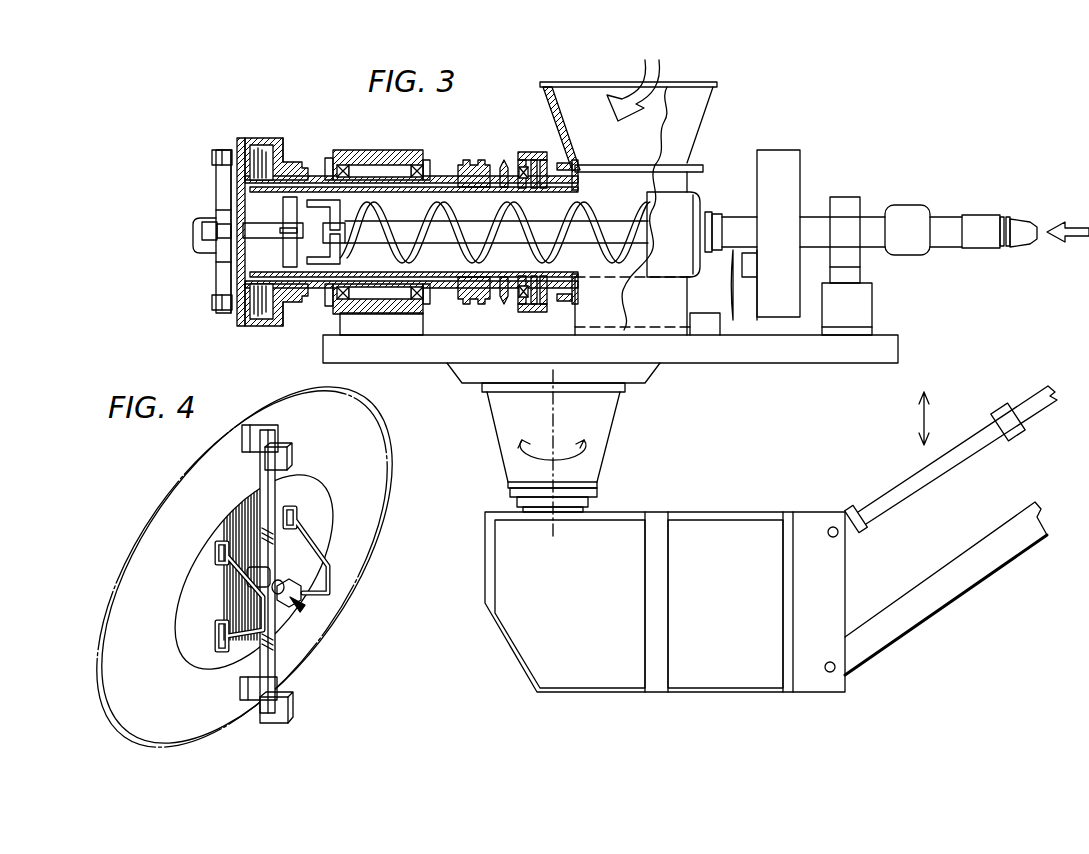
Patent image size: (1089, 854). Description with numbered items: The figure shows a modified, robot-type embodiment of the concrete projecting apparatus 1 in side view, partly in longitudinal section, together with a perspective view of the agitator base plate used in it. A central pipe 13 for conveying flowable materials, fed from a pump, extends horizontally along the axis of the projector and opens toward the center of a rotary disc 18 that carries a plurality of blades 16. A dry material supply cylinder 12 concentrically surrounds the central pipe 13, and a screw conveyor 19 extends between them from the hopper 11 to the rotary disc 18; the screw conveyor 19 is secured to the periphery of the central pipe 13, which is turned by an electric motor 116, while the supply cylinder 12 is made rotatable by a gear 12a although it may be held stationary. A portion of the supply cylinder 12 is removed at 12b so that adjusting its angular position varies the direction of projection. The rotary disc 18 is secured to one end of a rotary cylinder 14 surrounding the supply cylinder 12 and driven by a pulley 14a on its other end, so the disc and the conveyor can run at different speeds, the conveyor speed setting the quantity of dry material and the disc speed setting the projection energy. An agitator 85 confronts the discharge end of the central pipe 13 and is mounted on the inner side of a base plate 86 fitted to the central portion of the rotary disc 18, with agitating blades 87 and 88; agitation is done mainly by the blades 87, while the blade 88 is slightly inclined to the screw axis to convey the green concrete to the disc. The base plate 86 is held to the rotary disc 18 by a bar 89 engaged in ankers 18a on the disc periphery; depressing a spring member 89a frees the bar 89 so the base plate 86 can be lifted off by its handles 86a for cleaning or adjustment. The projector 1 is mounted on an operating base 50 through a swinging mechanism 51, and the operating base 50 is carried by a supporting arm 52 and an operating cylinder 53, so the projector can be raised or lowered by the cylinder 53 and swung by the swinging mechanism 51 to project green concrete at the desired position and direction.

In FIG. 3, the projecting apparatus 1 is at (190, 157).
In FIG. 3, the hopper 11 is at (685, 128).
In FIG. 3, the dry material supply cylinder 12 is at (378, 267).
In FIG. 3, the gear 12a is at (502, 163).
In FIG. 3, the removed portion of the cylinder 12b is at (268, 322).
In FIG. 3, the central pipe 13 is at (745, 223).
In FIG. 3, the rotary cylinder 14 is at (434, 176).
In FIG. 3, the pulley 14a is at (473, 160).
In FIG. 3, the blades 16 is at (250, 140).
In FIG. 3, the rotary disc 18 is at (235, 152).
In FIG. 4, the rotary disc 18 is at (140, 555).
In FIG. 4, the ankers 18a is at (285, 452).
In FIG. 3, the screw conveyor 19 is at (548, 253).
In FIG. 3, the operating base 50 is at (733, 530).
In FIG. 3, the swinging mechanism 51 is at (610, 413).
In FIG. 3, the supporting arm 52 is at (948, 575).
In FIG. 3, the operating cylinder 53 is at (1015, 437).
In FIG. 3, the agitator 85 is at (224, 231).
In FIG. 4, the agitator 85 is at (305, 600).
In FIG. 3, the base plate 86 is at (255, 213).
In FIG. 4, the base plate 86 is at (270, 485).
In FIG. 3, the handles 86a is at (212, 250).
In FIG. 4, the handles 86a is at (330, 580).
In FIG. 3, the agitating blades 87 is at (248, 322).
In FIG. 3, the agitating blade 88 is at (288, 253).
In FIG. 3, the bar 89 is at (220, 275).
In FIG. 4, the bar 89 is at (293, 492).
In FIG. 3, the spring member 89a is at (203, 218).
In FIG. 4, the spring member 89a is at (294, 612).
In FIG. 3, the electric motor 116 is at (728, 302).